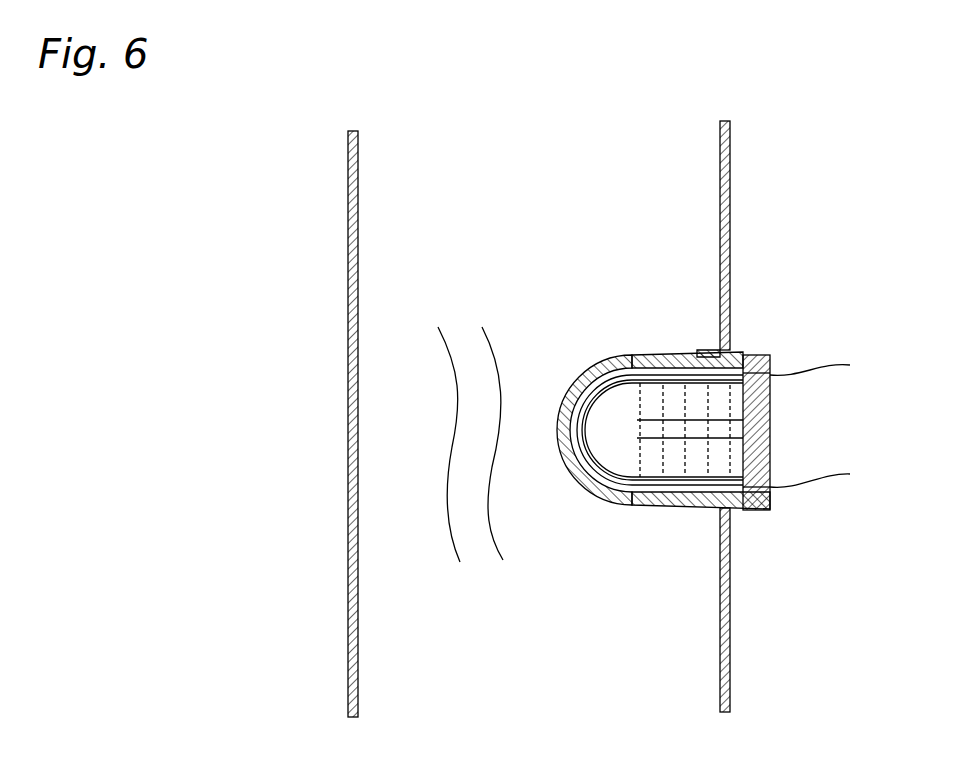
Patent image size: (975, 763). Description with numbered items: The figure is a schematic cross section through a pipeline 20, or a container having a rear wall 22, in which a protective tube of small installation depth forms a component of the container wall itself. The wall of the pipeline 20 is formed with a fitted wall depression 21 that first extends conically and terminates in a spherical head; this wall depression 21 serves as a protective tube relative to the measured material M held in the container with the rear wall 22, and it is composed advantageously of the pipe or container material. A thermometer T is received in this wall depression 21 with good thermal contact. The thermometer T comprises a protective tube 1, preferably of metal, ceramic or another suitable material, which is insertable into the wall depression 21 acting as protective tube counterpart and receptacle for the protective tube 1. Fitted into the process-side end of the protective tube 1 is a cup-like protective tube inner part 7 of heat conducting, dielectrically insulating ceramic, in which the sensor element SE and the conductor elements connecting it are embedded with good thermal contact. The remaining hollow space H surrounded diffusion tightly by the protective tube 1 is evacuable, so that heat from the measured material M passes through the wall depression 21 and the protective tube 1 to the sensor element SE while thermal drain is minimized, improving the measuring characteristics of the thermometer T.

The protective tube 1 is at (702, 457).
The protective tube inner part 7 is at (610, 480).
The pipeline 20 is at (732, 620).
The wall depression 21 is at (608, 366).
The rear wall 22 is at (348, 487).
The thermometer T is at (768, 320).
The measured material M is at (447, 355).
The sensor element SE is at (578, 435).
The hollow space H is at (660, 468).